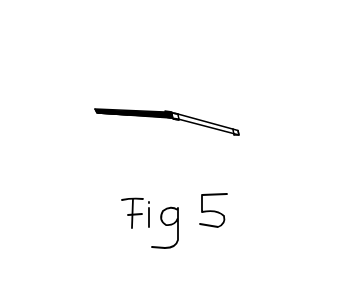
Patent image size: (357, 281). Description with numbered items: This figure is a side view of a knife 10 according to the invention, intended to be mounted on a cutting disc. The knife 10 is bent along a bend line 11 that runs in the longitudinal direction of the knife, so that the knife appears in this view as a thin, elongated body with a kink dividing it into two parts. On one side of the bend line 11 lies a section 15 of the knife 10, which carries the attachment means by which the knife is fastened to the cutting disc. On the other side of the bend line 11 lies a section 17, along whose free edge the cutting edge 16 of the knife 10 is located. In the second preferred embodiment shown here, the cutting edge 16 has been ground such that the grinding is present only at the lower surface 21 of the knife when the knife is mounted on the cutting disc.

The knife 10 is at (198, 118).
The bend line 11 is at (170, 112).
The section 15 is at (212, 128).
The cutting edge 16 is at (95, 109).
The section 17 is at (127, 117).
The lower surface 21 is at (143, 118).